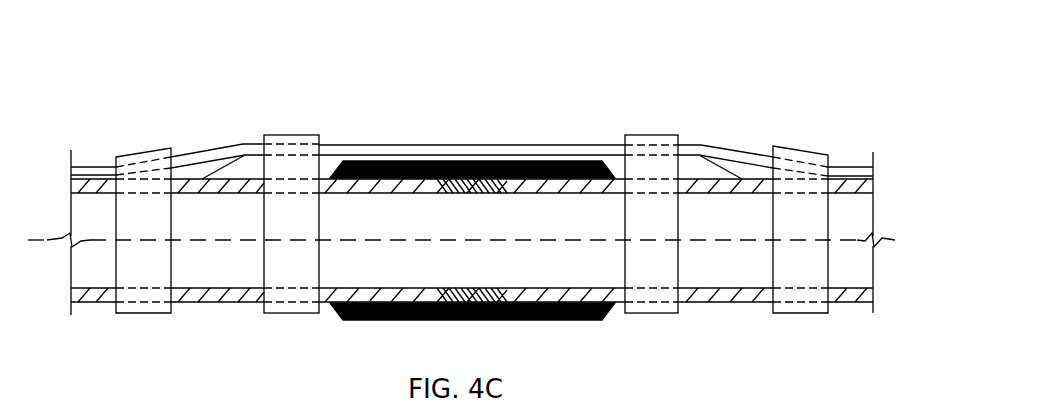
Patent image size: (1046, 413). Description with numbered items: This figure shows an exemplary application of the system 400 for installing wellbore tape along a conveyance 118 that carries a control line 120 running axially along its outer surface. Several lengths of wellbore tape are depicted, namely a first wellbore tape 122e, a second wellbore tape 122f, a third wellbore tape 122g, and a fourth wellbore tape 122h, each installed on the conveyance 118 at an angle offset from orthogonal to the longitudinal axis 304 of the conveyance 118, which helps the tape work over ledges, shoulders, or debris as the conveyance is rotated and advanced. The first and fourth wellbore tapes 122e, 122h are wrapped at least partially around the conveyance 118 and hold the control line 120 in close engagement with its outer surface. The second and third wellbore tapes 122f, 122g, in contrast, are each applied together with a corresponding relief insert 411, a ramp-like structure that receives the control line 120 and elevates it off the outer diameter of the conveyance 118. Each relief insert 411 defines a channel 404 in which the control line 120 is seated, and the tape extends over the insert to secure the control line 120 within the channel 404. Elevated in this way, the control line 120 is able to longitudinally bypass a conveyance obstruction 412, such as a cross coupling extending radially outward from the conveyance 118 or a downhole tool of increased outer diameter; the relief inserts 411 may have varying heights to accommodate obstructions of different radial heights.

The system 400 is at (441, 59).
The longitudinal axis 304 is at (38, 238).
The conveyance 118 is at (553, 194).
The conveyance obstruction 412 is at (505, 160).
The control line 120 is at (390, 145).
The relief inserts 411 is at (253, 152).
The channel 404 is at (302, 155).
The first wellbore tape 122e is at (173, 208).
The second wellbore tape 122f is at (322, 260).
The third wellbore tape 122g is at (625, 260).
The fourth wellbore tape 122h is at (772, 270).